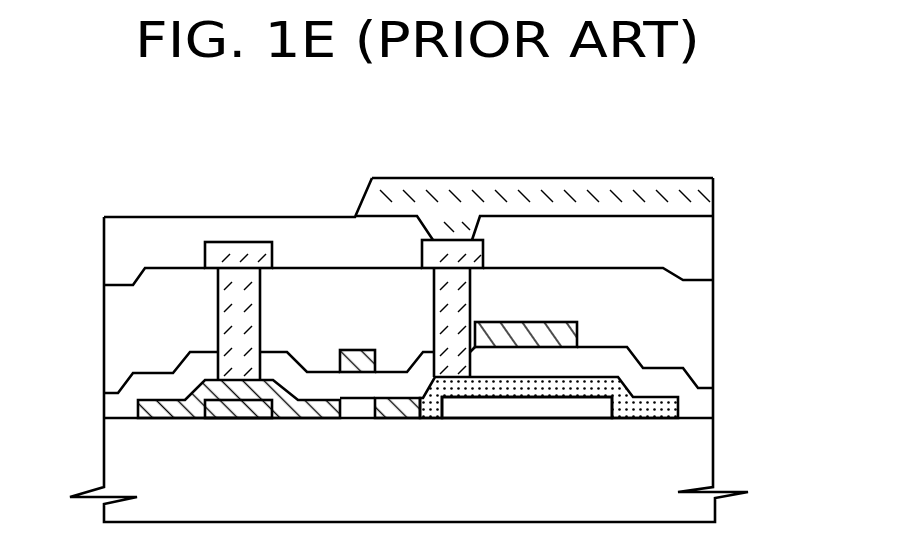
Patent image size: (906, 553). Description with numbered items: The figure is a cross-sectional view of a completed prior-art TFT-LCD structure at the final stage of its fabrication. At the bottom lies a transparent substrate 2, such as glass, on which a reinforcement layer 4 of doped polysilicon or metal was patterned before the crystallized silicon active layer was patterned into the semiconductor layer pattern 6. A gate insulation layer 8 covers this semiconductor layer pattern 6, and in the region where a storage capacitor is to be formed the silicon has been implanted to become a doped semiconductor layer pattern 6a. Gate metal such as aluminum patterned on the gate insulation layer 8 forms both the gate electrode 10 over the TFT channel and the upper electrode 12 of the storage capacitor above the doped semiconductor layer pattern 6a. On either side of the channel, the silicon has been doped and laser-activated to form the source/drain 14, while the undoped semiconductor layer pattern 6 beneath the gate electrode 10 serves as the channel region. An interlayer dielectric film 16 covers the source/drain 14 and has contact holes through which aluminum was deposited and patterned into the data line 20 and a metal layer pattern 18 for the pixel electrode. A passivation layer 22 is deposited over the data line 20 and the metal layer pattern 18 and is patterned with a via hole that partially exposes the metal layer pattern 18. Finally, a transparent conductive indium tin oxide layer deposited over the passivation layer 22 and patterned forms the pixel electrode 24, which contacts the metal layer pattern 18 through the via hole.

The transparent substrate 2 is at (698, 457).
The reinforcement layer 4 is at (238, 413).
The semiconductor layer pattern 6 is at (353, 412).
The doped semiconductor layer pattern 6a is at (663, 402).
The gate insulation layer 8 is at (675, 382).
The gate electrode 10 is at (353, 350).
The upper electrode of the storage capacitor 12 is at (528, 323).
The source/drain 14 is at (138, 412).
The interlayer dielectric film 16 is at (118, 317).
The metal layer pattern for a pixel electrode 18 is at (435, 256).
The data line 20 is at (232, 242).
The passivation layer 22 is at (118, 250).
The pixel electrode 24 is at (713, 203).